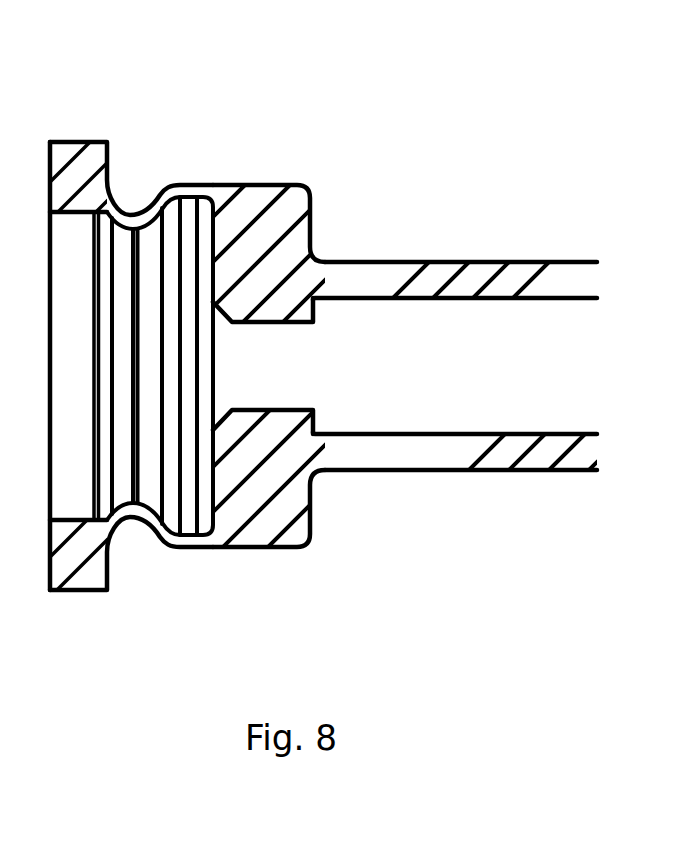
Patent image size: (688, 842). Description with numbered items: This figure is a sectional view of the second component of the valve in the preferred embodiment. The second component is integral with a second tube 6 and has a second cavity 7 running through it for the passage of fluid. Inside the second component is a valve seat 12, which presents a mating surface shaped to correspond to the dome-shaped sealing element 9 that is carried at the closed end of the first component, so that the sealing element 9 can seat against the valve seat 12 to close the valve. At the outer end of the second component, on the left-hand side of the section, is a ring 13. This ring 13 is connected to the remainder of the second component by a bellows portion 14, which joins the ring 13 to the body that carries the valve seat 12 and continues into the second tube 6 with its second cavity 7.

The ring 13 is at (83, 167).
The bellows portion 14 is at (149, 207).
The valve seat 12 is at (220, 304).
The sealing element 9 is at (277, 223).
The second tube 6 is at (470, 278).
The second cavity 7 is at (520, 340).